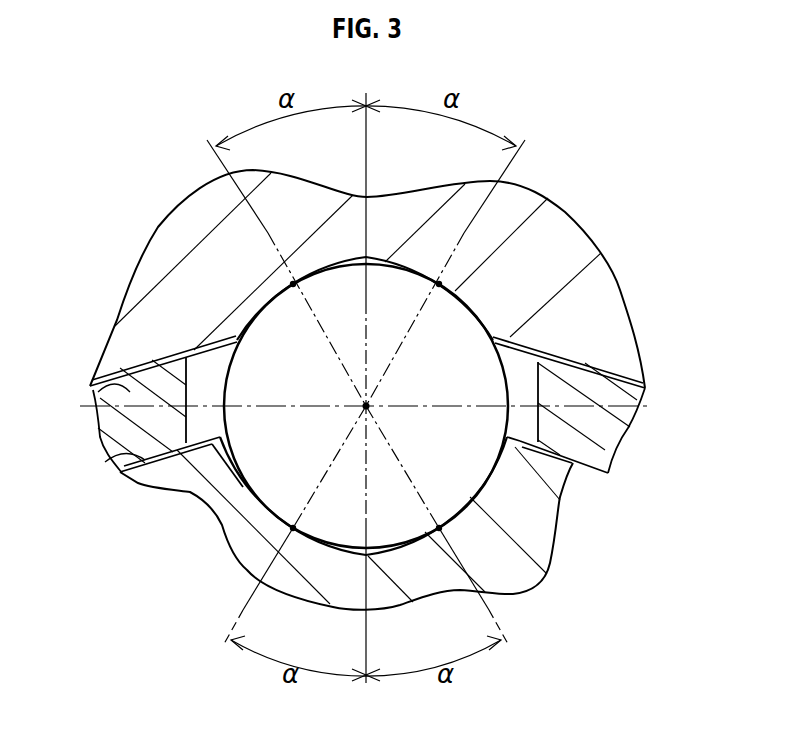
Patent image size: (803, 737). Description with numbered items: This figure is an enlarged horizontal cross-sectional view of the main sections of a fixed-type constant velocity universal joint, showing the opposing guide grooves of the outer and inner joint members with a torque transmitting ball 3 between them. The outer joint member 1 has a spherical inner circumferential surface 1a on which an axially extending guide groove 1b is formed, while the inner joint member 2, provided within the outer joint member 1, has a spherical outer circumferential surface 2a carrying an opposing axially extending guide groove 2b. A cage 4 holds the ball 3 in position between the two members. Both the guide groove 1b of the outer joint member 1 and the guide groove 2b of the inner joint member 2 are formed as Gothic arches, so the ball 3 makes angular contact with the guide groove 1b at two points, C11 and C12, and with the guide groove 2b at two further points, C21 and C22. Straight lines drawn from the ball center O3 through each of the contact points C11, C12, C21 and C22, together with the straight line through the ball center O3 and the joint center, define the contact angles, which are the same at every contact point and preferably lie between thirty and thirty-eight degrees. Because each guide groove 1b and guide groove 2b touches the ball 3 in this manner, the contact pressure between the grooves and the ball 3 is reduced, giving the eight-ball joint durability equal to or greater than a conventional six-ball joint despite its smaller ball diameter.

The outer joint member 1 is at (172, 243).
The inner circumferential surface 1a is at (93, 400).
The guide groove 1b is at (348, 260).
The inner joint member 2 is at (542, 535).
The outer circumferential surface 2a is at (125, 452).
The guide groove 2b is at (350, 545).
The torque transmitting ball 3 is at (257, 450).
The cage 4 is at (600, 397).
The contact point C11 is at (439, 284).
The contact point C12 is at (293, 284).
The contact point C21 is at (439, 528).
The contact point C22 is at (293, 528).
The ball center O3 is at (373, 403).